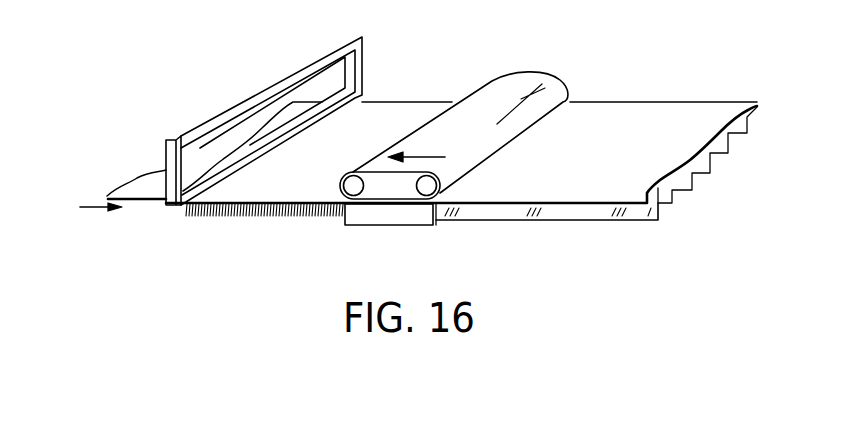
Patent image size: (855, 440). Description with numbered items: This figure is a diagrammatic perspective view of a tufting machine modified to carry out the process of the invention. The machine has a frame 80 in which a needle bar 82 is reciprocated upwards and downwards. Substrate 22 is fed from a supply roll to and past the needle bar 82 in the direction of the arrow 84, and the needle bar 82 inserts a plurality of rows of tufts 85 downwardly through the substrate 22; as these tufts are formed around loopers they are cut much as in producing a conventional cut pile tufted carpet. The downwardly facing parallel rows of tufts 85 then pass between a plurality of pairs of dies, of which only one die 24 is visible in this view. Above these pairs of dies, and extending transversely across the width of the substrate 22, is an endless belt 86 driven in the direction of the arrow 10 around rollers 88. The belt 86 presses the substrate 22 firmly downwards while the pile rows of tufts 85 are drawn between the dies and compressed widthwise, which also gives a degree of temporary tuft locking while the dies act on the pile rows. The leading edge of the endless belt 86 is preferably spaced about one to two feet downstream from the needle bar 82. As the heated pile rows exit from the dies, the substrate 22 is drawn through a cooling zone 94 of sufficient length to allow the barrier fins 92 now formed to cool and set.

The arrow 10 is at (430, 157).
The substrate 22 is at (147, 189).
The die 24 is at (366, 217).
The frame 80 is at (304, 110).
The needle bar 82 is at (303, 119).
The arrow 84 is at (86, 207).
The tufts 85 is at (226, 212).
The endless belt 86 is at (500, 91).
The rollers 88 is at (364, 186).
The barrier fins 92 is at (664, 206).
The cooling zone 94 is at (662, 247).